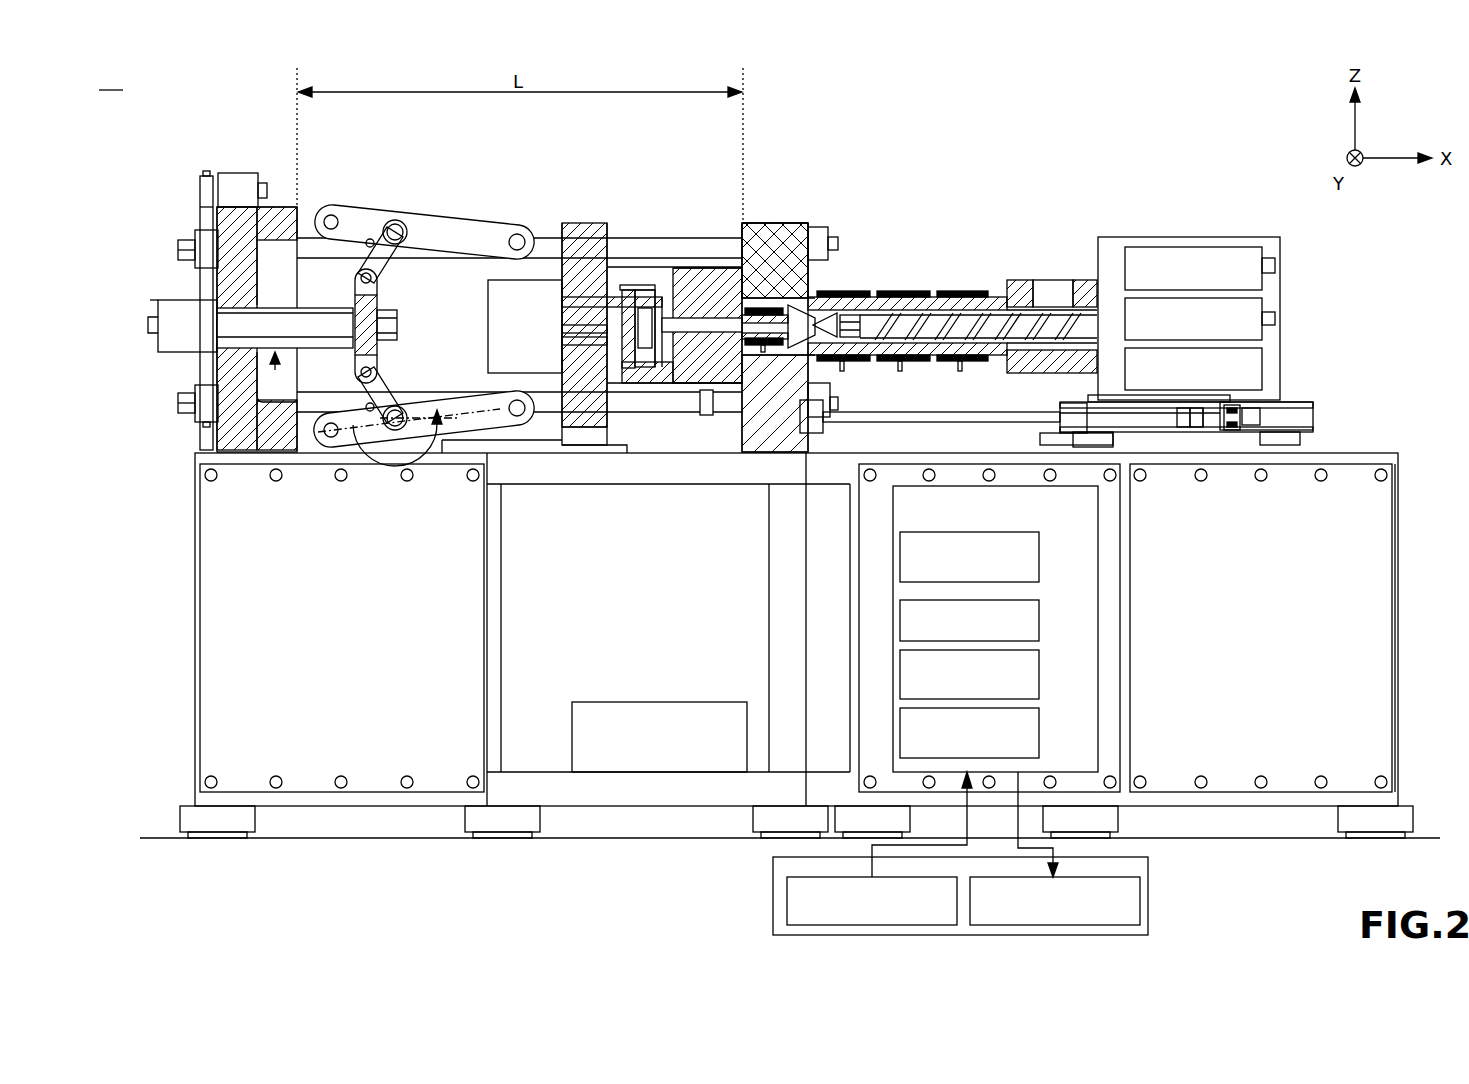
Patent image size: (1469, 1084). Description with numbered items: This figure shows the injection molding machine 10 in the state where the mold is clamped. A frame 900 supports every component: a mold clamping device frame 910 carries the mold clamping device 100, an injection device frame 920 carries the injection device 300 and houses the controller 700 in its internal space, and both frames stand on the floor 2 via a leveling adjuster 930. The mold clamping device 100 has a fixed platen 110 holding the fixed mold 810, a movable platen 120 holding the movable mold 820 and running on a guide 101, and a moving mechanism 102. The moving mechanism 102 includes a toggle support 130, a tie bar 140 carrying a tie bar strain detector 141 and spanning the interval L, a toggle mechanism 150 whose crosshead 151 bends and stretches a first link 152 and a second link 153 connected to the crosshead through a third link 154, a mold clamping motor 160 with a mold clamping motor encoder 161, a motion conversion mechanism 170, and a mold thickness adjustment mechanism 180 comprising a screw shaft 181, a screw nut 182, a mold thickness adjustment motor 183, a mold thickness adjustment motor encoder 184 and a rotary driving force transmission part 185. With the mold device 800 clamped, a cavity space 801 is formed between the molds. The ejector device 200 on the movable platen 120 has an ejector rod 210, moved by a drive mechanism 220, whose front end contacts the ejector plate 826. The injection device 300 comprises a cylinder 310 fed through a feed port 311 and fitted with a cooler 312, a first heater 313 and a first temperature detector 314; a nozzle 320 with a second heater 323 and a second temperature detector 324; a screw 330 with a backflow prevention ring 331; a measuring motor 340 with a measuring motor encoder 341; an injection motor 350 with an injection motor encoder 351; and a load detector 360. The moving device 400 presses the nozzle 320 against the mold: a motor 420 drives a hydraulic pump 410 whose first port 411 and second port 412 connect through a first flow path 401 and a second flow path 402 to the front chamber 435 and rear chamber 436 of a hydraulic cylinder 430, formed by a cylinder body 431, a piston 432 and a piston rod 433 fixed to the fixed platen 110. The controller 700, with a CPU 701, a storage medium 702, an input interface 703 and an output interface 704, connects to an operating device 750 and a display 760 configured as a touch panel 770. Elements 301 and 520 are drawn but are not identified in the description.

The injection molding machine 10 is at (111, 78).
The mold clamping device 100 is at (826, 189).
The guide 101 is at (622, 437).
The moving mechanism 102 is at (144, 300).
The fixed platen 110 is at (781, 332).
The movable platen 120 is at (594, 228).
The toggle support 130 is at (232, 380).
The tie bar 140 is at (745, 280).
The tie bar strain detector 141 is at (790, 300).
The toggle mechanism 150 is at (424, 286).
The crosshead 151 is at (360, 300).
The first link 152 is at (440, 236).
The second link 153 is at (386, 252).
The third link 154 is at (385, 313).
The mold clamping motor 160 is at (157, 343).
The mold clamping motor encoder 161 is at (146, 325).
The motion conversion mechanism 170 is at (268, 300).
The mold thickness adjustment mechanism 180 is at (183, 278).
The screw shaft 181 is at (168, 326).
The screw nut 182 is at (196, 232).
The mold thickness adjustment motor 183 is at (205, 176).
The mold thickness adjustment motor encoder 184 is at (240, 173).
The rotary driving force transmission part 185 is at (196, 201).
The ejector device 200 is at (547, 290).
The ejector rod 210 is at (568, 300).
The drive mechanism 220 is at (521, 290).
The injection device 300 is at (1094, 293).
The injection unit housing 301 is at (1239, 290).
The cylinder 310 is at (860, 300).
The feed port 311 is at (1045, 282).
The cooler 312 is at (1013, 282).
The first heater 313 is at (917, 322).
The first temperature detector 314 is at (964, 372).
The nozzle 320 is at (831, 245).
The second heater 323 is at (757, 352).
The second temperature detector 324 is at (772, 355).
The screw 330 is at (955, 278).
The backflow prevention ring 331 is at (853, 315).
The measuring motor 340 is at (1212, 248).
The measuring motor encoder 341 is at (1276, 262).
The injection motor 350 is at (1262, 298).
The injection motor encoder 351 is at (1276, 318).
The load detector 360 is at (1265, 350).
The moving device 400 is at (1124, 655).
The first flow path 401 is at (1090, 397).
The second flow path 402 is at (1226, 433).
The hydraulic pump 410 is at (1272, 440).
The first port 411 is at (1252, 415).
The second port 412 is at (1244, 433).
The motor 420 is at (1302, 435).
The hydraulic cylinder 430 is at (1227, 670).
The cylinder body 431 is at (1200, 432).
The piston 432 is at (1188, 432).
The piston rod 433 is at (1178, 432).
The front chamber 435 is at (1040, 437).
The rear chamber 436 is at (1202, 433).
The platen mount 520 is at (270, 437).
The controller 700 is at (989, 598).
The CPU 701 is at (1043, 558).
The storage medium 702 is at (1043, 617).
The input interface 703 is at (1043, 676).
The output interface 704 is at (1043, 736).
The operating device 750 is at (787, 897).
The display 760 is at (1148, 908).
The touch panel 770 is at (949, 896).
The mold device 800 is at (652, 259).
The cavity space 801 is at (700, 300).
The fixed mold 810 is at (707, 291).
The movable mold 820 is at (650, 300).
The ejector plate 826 is at (628, 290).
The frame 900 is at (784, 660).
The mold clamping device frame 910 is at (180, 627).
The injection device frame 920 is at (1410, 716).
The leveling adjuster 930 is at (1370, 832).
The floor 2 is at (1420, 838).